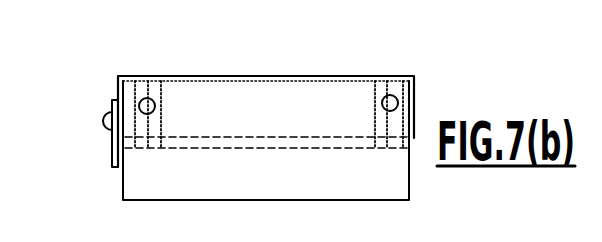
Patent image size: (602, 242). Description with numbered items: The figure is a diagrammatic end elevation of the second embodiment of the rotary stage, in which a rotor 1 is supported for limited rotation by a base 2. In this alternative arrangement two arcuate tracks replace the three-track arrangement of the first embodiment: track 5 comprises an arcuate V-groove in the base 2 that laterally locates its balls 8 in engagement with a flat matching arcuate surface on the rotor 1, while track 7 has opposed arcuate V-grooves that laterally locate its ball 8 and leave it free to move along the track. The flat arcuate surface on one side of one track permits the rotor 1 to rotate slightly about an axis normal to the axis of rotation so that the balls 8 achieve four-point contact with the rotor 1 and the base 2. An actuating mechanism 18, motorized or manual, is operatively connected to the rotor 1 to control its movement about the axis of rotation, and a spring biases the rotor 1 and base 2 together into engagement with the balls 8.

The rotor 1 is at (260, 100).
The base 2 is at (349, 188).
The track 5 is at (148, 149).
The track 7 is at (393, 149).
The balls 8 is at (139, 100).
The actuating mechanism 18 is at (110, 154).